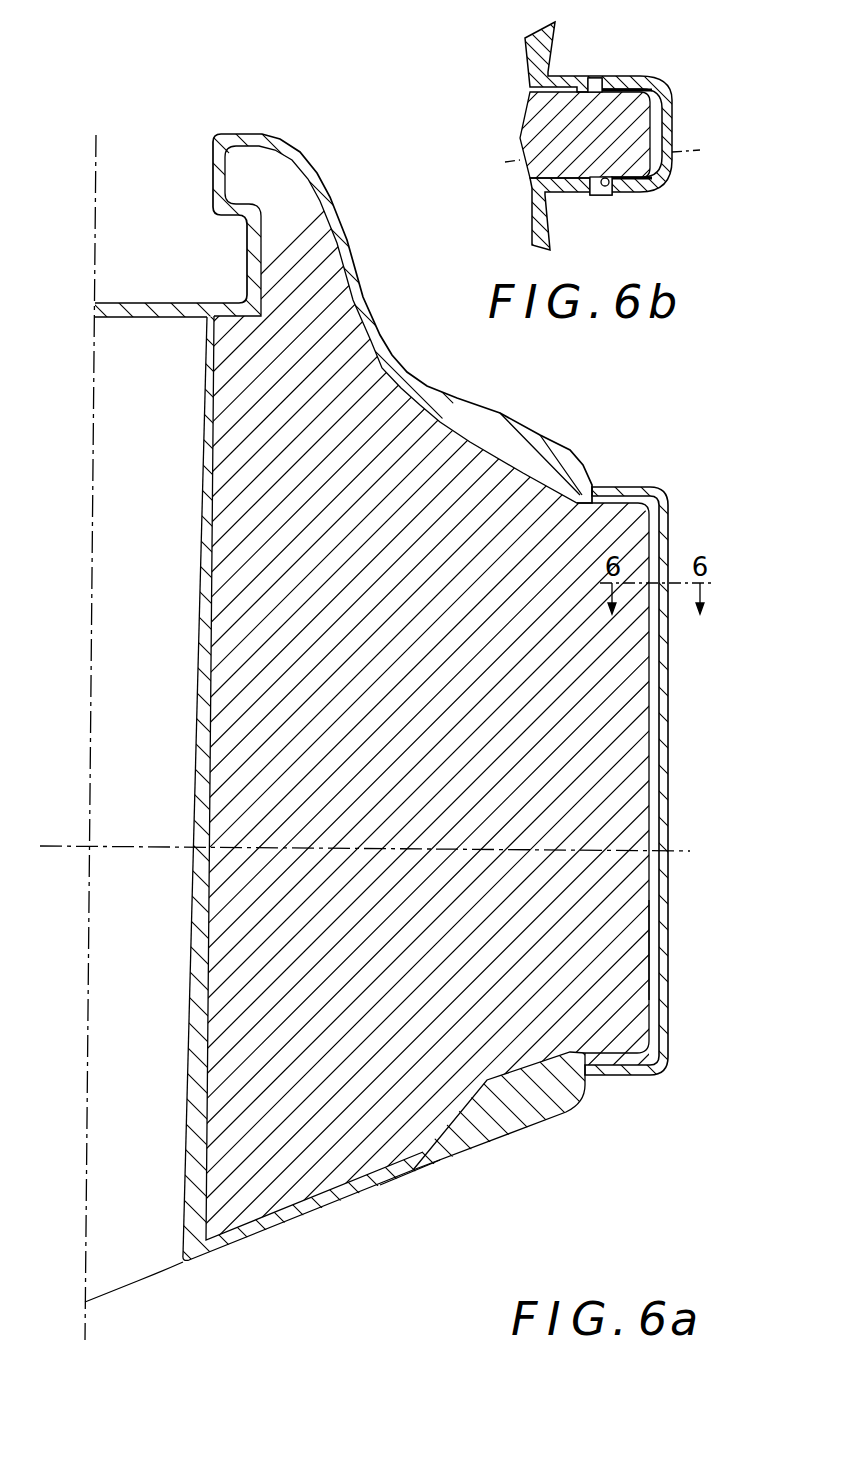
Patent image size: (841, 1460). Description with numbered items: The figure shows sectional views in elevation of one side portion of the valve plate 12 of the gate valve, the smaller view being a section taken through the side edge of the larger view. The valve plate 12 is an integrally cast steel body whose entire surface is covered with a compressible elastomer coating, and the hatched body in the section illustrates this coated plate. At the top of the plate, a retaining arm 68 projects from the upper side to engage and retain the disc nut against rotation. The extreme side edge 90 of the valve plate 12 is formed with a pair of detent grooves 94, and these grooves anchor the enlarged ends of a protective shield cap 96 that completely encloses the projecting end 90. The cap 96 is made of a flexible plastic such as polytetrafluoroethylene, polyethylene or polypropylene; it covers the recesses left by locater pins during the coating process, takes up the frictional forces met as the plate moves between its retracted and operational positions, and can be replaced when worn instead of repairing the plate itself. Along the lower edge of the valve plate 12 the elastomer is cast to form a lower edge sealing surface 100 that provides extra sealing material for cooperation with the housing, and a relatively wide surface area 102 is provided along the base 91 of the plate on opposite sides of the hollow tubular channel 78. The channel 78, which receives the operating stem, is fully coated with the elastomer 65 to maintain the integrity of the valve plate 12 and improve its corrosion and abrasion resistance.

In FIG. 6a, the valve plate 12 is at (413, 432).
In FIG. 6a, the elastomer 65 is at (194, 828).
In FIG. 6a, the retaining arms 68 is at (263, 133).
In FIG. 6a, the hollow tubular channel 78 is at (152, 1275).
In FIG. 6a, the extreme side edges 90 is at (620, 946).
In FIG. 6b, the extreme side edges 90 is at (548, 148).
In FIG. 6a, the base 91 is at (403, 1160).
In FIG. 6b, the detent grooves 94 is at (580, 77).
In FIG. 6a, the shield cap 96 is at (662, 493).
In FIG. 6b, the shield cap 96 is at (673, 155).
In FIG. 6a, the lower edge sealing surfaces 100 is at (553, 1115).
In FIG. 6a, the wide surface area 102 is at (307, 1218).